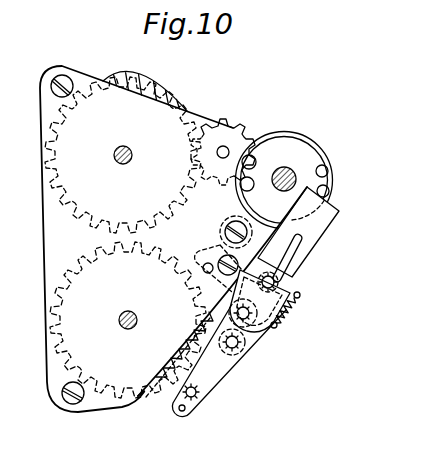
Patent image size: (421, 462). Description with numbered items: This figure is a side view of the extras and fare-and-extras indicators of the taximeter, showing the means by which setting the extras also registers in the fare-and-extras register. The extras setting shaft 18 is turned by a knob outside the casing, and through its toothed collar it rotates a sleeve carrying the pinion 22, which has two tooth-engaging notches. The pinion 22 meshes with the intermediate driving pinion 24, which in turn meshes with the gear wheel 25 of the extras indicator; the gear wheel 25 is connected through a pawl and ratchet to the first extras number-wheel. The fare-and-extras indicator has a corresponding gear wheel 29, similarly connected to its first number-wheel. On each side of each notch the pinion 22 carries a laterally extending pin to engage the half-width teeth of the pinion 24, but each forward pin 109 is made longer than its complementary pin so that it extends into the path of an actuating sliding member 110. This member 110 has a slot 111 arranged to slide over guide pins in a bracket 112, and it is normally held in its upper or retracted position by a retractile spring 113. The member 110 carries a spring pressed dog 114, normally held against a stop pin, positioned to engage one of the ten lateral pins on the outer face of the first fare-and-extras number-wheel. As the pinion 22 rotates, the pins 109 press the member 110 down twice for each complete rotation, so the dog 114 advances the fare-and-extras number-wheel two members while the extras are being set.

The gear wheel 25 is at (143, 83).
The driving pinion 24 is at (230, 137).
The pinion 22 is at (310, 150).
The shaft 18 is at (291, 172).
The forward pin 109 is at (254, 166).
The actuating sliding member 110 is at (316, 229).
The slot 111 is at (299, 253).
The bracket 112 is at (298, 289).
The retractile spring 113 is at (285, 315).
The spring pressed dog 114 is at (243, 352).
The gear wheel 29 is at (152, 389).